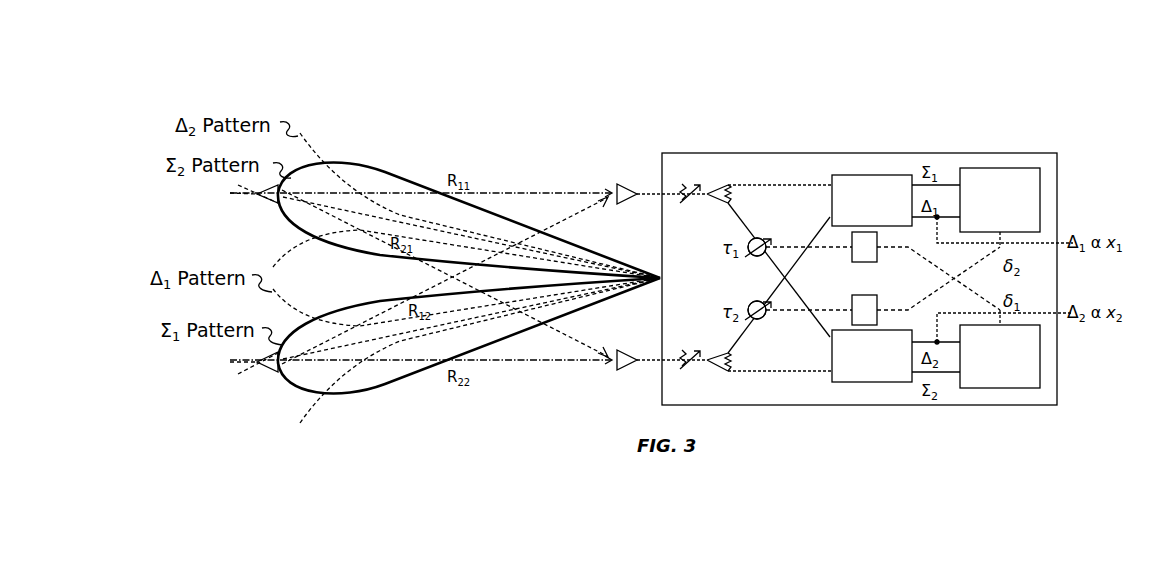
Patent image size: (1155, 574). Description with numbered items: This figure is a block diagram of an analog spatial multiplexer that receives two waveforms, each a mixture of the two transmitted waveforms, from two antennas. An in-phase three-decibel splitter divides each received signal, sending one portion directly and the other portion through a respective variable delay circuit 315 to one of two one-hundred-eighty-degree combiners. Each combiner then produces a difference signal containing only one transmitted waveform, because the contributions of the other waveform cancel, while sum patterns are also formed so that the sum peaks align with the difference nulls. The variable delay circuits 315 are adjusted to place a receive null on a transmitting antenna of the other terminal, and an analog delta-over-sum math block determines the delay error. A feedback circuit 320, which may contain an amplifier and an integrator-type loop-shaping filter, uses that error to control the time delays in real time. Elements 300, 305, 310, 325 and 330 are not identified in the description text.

The variable delay circuit 315 is at (759, 240).
The feedback circuit 320 is at (852, 260).
The analog spatial multiplexer 300 is at (859, 267).
The antenna 305 is at (244, 279).
The amplifier 310 is at (631, 270).
The 180 degree combiner 325 is at (865, 278).
The channel math unit 330 is at (1000, 278).